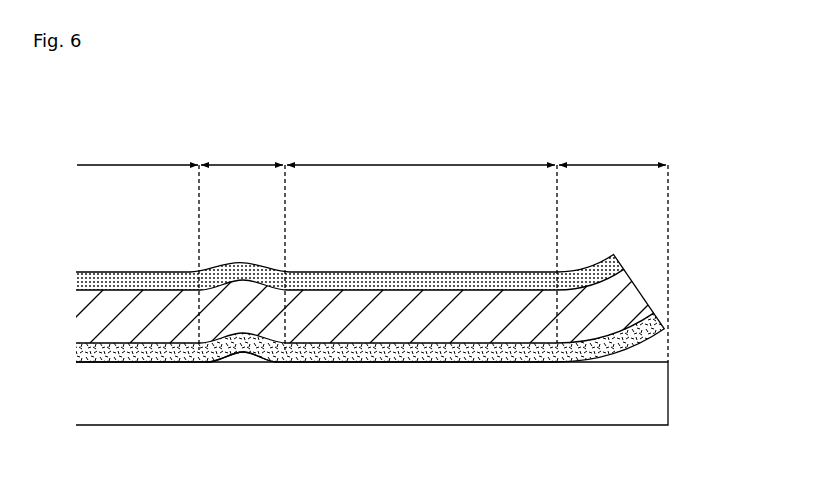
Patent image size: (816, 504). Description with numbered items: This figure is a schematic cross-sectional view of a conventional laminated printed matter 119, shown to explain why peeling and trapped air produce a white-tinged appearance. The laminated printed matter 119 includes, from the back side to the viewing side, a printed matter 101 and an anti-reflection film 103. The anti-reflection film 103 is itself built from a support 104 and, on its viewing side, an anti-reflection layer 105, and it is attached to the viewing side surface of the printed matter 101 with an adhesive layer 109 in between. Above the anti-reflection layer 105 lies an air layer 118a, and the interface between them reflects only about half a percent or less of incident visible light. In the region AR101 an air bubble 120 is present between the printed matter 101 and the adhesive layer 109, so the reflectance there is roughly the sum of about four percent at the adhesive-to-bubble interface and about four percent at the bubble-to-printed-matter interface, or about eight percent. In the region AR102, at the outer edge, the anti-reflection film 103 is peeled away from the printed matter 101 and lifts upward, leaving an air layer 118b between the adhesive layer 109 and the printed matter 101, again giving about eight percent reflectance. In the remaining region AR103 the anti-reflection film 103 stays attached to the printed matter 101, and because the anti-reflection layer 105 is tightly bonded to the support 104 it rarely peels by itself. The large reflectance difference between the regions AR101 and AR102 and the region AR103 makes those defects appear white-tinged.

The laminated printed matter 119 is at (72, 136).
The region AR103 is at (317, 243).
The region AR101 is at (243, 243).
The region AR102 is at (612, 152).
The air layer 118a is at (585, 216).
The air layer 118b is at (647, 350).
The printed matter 101 is at (663, 393).
The anti-reflection film 103 is at (747, 237).
The anti-reflection layer 105 is at (618, 267).
The support 104 is at (633, 302).
The adhesive layer 109 is at (662, 325).
The air bubble 120 is at (243, 357).